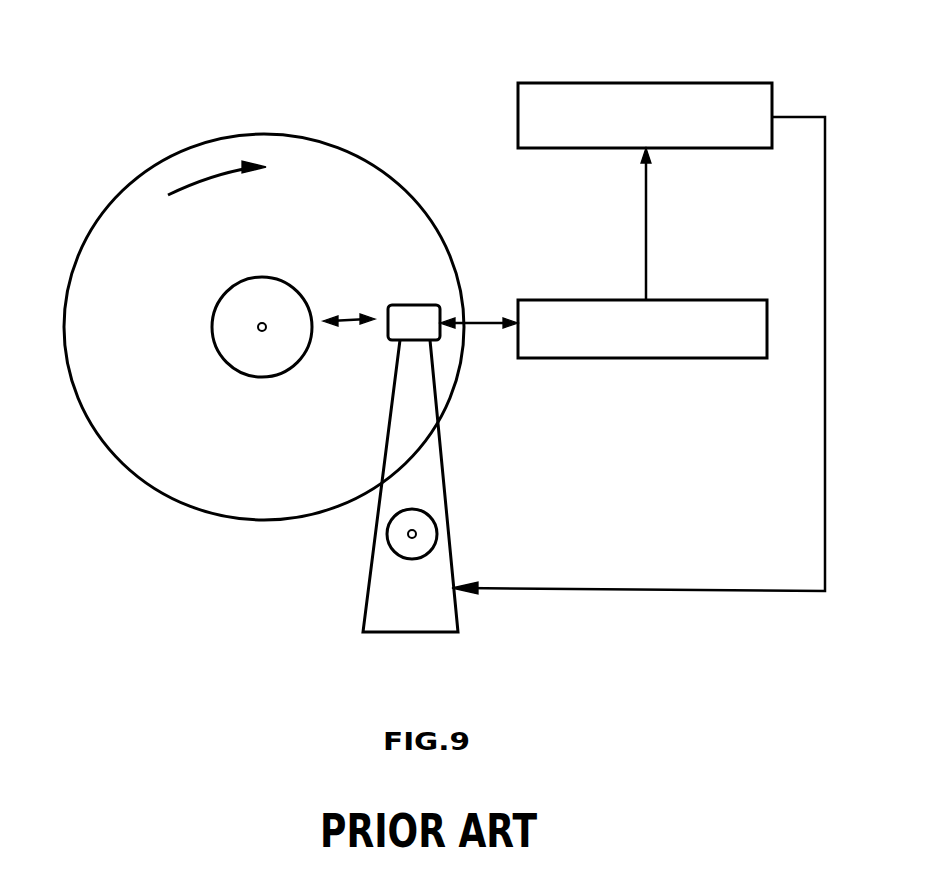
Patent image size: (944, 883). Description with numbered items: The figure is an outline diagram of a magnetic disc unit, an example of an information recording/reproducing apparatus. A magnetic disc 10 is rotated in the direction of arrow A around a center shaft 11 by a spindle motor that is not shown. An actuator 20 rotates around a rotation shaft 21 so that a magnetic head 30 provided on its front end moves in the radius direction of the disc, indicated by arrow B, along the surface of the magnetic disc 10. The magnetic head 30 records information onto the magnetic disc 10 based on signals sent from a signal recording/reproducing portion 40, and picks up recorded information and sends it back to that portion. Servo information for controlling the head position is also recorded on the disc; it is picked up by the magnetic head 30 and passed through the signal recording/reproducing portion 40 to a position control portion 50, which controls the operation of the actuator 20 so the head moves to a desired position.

The magnetic disc 10 is at (145, 458).
The center shaft 11 is at (264, 322).
The actuator 20 is at (420, 579).
The rotation shaft 21 is at (412, 532).
The magnetic head 30 is at (406, 305).
The signal recording/reproducing portion 40 is at (718, 300).
The position control portion 50 is at (727, 83).